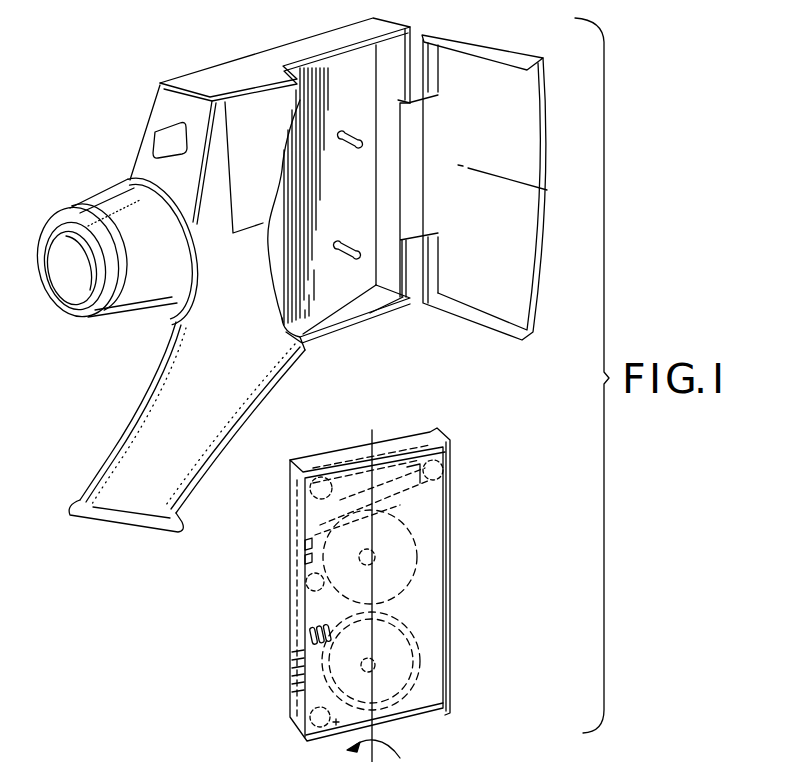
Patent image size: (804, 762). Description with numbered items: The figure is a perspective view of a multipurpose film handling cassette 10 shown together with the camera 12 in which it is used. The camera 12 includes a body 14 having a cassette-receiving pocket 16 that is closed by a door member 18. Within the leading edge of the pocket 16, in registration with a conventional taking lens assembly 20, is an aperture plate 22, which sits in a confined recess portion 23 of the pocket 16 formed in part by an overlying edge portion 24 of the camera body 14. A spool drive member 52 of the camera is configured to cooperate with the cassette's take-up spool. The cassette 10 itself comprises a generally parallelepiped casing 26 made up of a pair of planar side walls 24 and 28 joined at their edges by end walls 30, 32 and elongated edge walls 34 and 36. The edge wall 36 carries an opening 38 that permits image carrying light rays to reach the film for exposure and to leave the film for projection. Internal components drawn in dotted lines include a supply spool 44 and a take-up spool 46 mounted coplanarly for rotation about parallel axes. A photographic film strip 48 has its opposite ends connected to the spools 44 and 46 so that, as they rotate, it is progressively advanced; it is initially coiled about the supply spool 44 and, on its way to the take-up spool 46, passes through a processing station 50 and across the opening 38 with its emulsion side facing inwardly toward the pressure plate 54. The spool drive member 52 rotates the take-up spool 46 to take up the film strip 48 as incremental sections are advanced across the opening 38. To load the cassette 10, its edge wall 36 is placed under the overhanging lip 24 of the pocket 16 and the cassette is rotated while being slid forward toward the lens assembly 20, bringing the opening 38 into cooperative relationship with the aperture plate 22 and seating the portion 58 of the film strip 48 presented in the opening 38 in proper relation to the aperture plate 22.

The film handling cassette 10 is at (463, 595).
The camera 12 is at (121, 160).
The camera body 14 is at (243, 65).
The cassette-receiving pocket 16 is at (332, 292).
The door member 18 is at (490, 302).
The taking lens assembly 20 is at (100, 323).
The aperture plate 22 is at (294, 302).
The confined recess portion 23 is at (337, 207).
The overlying edge portion 24 is at (303, 100).
The casing 26 is at (437, 601).
The side wall 28 is at (432, 518).
The end wall 30 is at (392, 445).
The end wall 32 is at (418, 716).
The edge wall 34 is at (453, 613).
The edge wall 36 is at (292, 700).
The opening 38 is at (295, 667).
The supply spool 44 is at (413, 558).
The take-up spool 46 is at (417, 670).
The film strip 48 is at (342, 725).
The processing station 50 is at (362, 458).
The spool drive member 52 is at (349, 247).
The pressure plate 54 is at (293, 603).
The film portion 58 is at (297, 620).